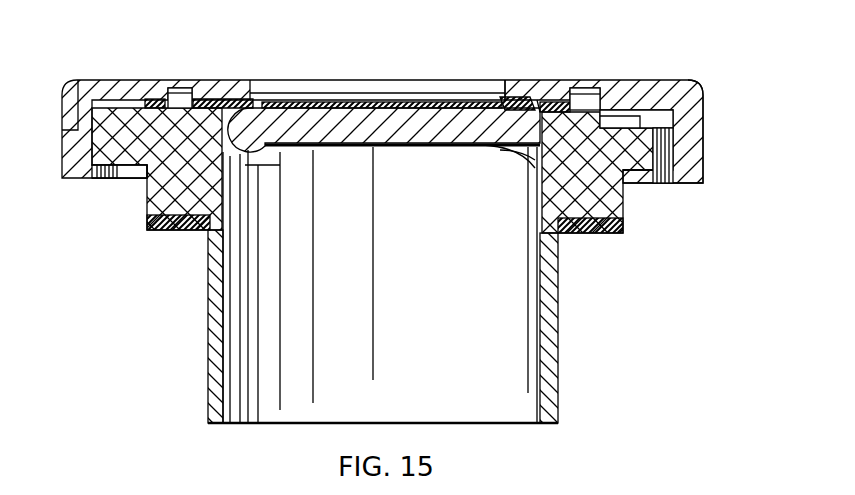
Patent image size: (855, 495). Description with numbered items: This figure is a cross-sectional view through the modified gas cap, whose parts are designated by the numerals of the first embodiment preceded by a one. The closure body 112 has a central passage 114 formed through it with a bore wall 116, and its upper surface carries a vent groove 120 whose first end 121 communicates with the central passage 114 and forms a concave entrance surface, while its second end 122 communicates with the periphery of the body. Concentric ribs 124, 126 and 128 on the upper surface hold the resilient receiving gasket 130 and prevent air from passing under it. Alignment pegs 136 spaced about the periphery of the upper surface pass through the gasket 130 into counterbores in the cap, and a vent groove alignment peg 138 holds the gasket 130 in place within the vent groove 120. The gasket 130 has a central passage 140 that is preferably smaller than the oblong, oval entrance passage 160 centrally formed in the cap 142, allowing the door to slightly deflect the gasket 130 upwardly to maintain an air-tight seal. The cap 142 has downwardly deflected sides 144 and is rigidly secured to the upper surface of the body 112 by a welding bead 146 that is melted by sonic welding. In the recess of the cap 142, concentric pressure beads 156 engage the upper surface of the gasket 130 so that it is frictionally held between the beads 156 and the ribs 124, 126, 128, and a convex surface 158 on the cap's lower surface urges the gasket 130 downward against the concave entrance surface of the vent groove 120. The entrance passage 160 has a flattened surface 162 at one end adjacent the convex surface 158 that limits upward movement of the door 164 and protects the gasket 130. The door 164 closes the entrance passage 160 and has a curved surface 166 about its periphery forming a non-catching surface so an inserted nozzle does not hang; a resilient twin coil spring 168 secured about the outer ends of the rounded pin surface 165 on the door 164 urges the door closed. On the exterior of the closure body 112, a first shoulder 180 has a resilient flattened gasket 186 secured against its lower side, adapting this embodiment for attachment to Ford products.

The closure body 112 is at (558, 404).
The central passage 114 is at (507, 376).
The bore wall 116 is at (548, 318).
The vent groove 120 is at (625, 122).
The first end of vent groove 121 is at (540, 150).
The second end of vent groove 122 is at (665, 133).
The concentric rib 124 is at (122, 177).
The inner rib 126 is at (147, 182).
The outer rib 128 is at (147, 185).
The receiving gasket 130 is at (500, 100).
The alignment peg 136 is at (173, 98).
The vent groove alignment peg 138 is at (590, 100).
The central passage of gasket 140 is at (405, 97).
The cap 142 is at (660, 84).
The downwardly deflected side 144 is at (707, 161).
The welding bead 146 is at (120, 106).
The pressure bead 156 is at (240, 98).
The convex surface 158 is at (550, 104).
The entrance passage 160 is at (350, 85).
The flattened surface 162 is at (515, 100).
The door 164 is at (318, 104).
The rounded pin surface 165 is at (185, 231).
The curved surface 166 is at (537, 100).
The twin coil spring 168 is at (222, 229).
The first shoulder 180 is at (627, 198).
The resilient flattened gasket 186 is at (607, 233).